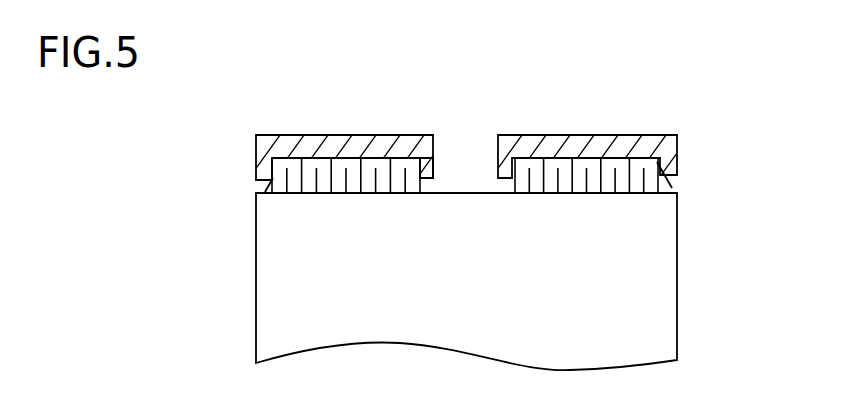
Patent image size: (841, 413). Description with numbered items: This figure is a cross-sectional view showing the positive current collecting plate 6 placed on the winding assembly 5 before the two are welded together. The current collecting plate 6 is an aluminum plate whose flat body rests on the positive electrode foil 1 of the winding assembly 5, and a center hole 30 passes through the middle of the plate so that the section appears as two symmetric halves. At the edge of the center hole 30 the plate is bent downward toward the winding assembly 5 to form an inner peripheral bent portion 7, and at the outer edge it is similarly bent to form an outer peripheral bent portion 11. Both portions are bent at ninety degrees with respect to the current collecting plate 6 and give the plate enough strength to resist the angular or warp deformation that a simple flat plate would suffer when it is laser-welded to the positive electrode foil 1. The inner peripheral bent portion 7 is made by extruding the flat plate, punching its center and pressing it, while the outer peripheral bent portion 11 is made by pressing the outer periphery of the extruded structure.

The positive electrode foil 1 is at (272, 180).
The winding assembly 5 is at (226, 290).
The current collecting plate 6 is at (258, 139).
The inner peripheral bent portion 7 is at (442, 160).
The outer peripheral bent portion 11 is at (677, 160).
The center hole 30 is at (465, 167).